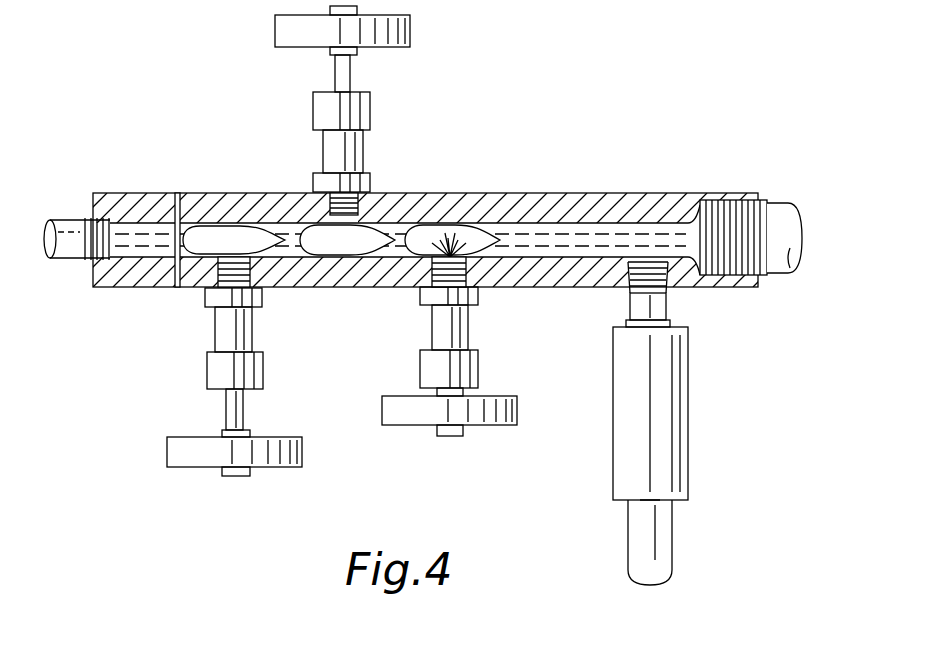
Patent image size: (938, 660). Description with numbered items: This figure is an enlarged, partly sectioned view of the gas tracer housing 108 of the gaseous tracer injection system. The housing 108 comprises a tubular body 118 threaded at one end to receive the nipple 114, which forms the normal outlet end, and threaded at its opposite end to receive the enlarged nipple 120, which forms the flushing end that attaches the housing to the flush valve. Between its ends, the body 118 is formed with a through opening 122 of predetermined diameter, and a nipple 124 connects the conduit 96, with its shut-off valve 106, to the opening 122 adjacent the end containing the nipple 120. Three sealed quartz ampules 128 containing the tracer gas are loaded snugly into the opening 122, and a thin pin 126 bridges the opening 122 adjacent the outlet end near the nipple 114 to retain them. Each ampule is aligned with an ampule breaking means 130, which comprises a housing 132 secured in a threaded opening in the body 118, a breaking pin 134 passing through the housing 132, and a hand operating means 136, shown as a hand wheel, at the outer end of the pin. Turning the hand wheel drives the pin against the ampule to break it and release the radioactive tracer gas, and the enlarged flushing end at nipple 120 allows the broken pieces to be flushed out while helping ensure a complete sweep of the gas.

The conduit 96 is at (665, 548).
The shut-off valve 106 is at (678, 402).
The gas tracer housing 108 is at (423, 204).
The nipple 114 is at (78, 224).
The tubular body 118 is at (625, 200).
The nipple 120 is at (780, 205).
The through opening 122 is at (568, 226).
The nipple 124 is at (665, 312).
The thin pin 126 is at (176, 206).
The sealed ampule 128 is at (243, 228).
The ampule breaking means 130 is at (303, 241).
The housing 132 is at (222, 321).
The breaking pin 134 is at (232, 407).
The hand operating means 136 is at (175, 452).